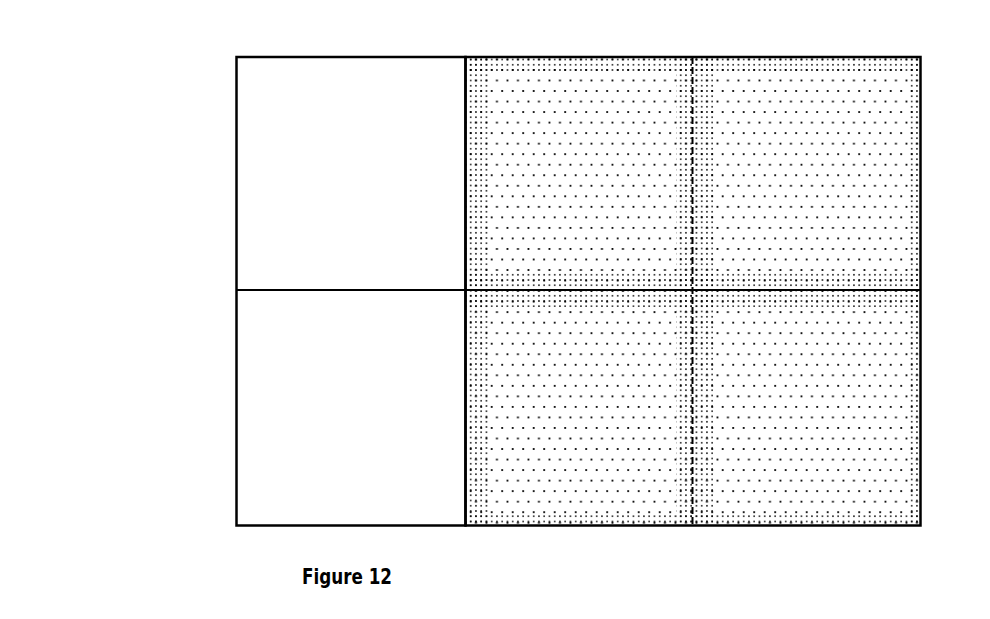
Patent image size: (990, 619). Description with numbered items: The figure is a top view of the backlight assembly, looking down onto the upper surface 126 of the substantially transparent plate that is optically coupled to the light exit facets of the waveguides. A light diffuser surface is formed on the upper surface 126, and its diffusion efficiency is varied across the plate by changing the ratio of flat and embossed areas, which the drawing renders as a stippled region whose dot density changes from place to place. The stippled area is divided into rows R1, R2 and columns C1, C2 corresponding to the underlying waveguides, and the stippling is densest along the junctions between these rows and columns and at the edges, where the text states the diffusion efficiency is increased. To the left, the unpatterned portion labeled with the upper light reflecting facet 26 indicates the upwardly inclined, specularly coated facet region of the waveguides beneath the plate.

The upper light reflecting facet 26 is at (283, 178).
The upper surface of the substantially transparent plate 126 is at (556, 88).
The row 1 R1 is at (530, 16).
The row 2 R2 is at (770, 16).
The column 1 C1 is at (946, 416).
The column 2 C2 is at (946, 173).